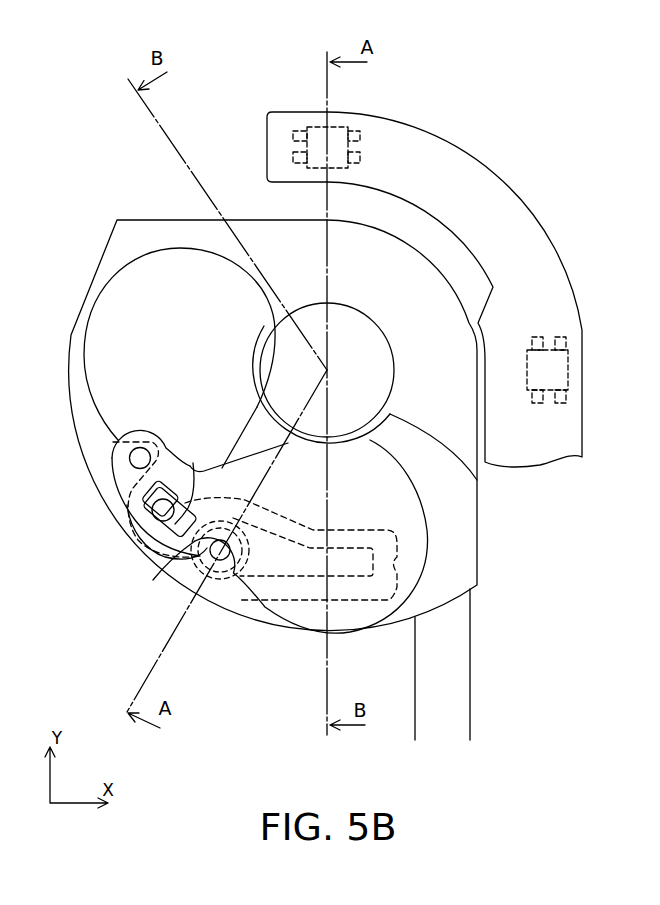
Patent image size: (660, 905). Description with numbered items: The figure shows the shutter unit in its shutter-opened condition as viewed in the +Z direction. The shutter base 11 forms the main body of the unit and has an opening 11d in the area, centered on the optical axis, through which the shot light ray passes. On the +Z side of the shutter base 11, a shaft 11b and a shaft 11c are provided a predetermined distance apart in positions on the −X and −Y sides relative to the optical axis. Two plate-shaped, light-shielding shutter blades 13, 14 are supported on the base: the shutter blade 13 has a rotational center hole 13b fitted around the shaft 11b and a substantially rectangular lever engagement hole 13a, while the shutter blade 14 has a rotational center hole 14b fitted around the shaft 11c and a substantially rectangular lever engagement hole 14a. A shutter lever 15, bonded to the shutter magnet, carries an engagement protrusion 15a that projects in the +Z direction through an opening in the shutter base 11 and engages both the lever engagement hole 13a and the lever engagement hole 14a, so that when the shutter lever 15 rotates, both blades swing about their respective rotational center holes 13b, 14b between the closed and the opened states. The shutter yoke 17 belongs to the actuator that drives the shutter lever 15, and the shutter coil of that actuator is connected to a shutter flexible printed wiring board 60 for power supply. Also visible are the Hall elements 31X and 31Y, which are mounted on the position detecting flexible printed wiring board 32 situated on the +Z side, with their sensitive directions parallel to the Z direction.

The shutter base 11 is at (113, 260).
The shaft 11b is at (130, 453).
The shaft 11c is at (248, 573).
The opening 11d is at (477, 477).
The shutter blade 13 is at (420, 523).
The lever engagement hole 13a is at (195, 465).
The rotational center hole 13b is at (158, 510).
The shutter blade 14 is at (97, 333).
The lever engagement hole 14a is at (163, 570).
The rotational center hole 14b is at (220, 580).
The shutter lever 15 is at (190, 560).
The engagement protrusion 15a is at (147, 518).
The shutter yoke 17 is at (390, 586).
The Hall element 31X is at (558, 370).
The Hall element 31Y is at (347, 130).
The position detecting flexible printed wiring board 32 is at (487, 193).
The shutter flexible printed wiring board 60 is at (455, 700).